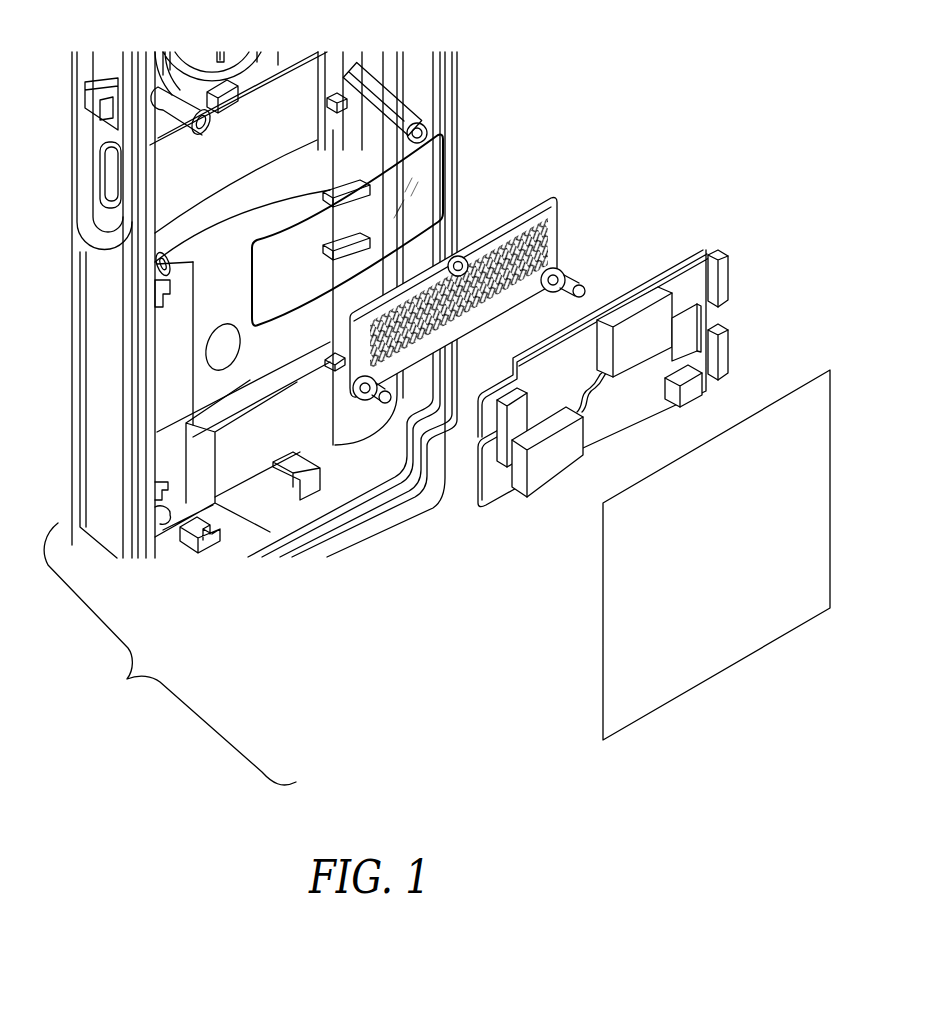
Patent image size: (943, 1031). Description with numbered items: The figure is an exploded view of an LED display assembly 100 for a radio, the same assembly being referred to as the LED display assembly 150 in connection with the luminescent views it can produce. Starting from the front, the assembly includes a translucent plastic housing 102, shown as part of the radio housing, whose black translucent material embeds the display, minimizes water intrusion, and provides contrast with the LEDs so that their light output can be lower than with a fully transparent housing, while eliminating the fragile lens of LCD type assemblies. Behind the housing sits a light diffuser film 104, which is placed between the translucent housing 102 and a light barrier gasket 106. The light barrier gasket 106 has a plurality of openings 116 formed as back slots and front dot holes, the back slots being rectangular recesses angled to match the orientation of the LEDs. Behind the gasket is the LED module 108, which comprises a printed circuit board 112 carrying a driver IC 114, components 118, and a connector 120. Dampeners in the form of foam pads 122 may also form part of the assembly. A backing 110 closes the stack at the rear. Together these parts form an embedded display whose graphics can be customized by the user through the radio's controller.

The LED display assembly 100 is at (148, 786).
The translucent plastic housing 102 is at (303, 80).
The light diffuser film 104 is at (447, 180).
The light barrier gasket 106 is at (558, 238).
The LED module 108 is at (728, 318).
The backing 110 is at (832, 449).
The printed circuit board 112 is at (683, 260).
The driver IC 114 is at (690, 327).
The openings 116 is at (557, 197).
The components 118 is at (640, 397).
The connector 120 is at (477, 432).
The foam pads 122 is at (537, 480).
The LED display assembly 150 is at (170, 654).